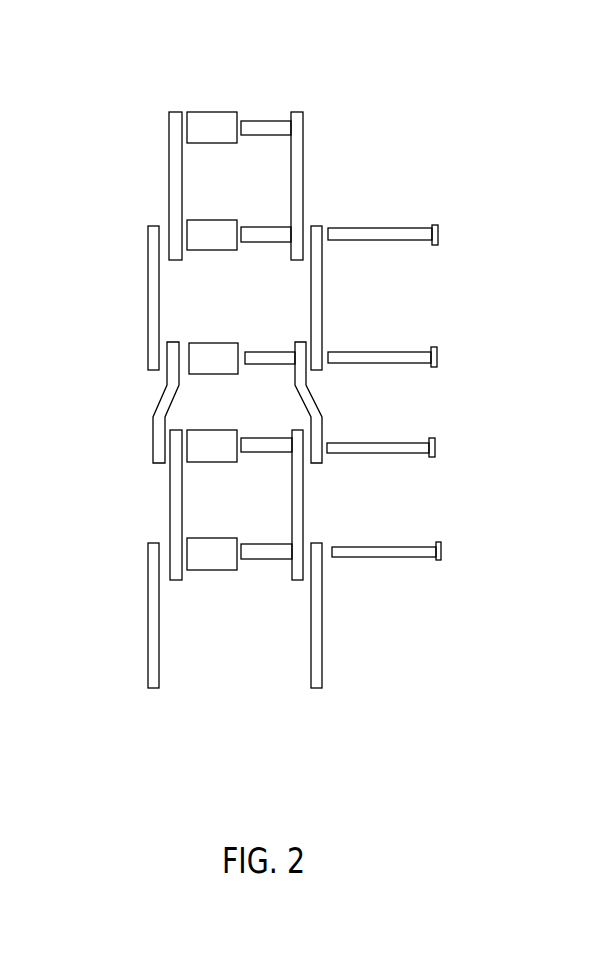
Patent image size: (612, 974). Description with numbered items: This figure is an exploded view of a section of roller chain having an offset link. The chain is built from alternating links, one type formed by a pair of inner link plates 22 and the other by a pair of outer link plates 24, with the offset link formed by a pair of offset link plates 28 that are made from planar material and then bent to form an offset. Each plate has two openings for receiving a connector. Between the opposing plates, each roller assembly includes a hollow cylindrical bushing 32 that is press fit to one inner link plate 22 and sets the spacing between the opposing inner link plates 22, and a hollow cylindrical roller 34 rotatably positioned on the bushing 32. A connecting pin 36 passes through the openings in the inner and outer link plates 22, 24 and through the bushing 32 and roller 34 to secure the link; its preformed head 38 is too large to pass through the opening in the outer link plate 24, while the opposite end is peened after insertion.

The inner link plate 22 is at (169, 160).
The outer link plate 24 is at (322, 307).
The offset link plate 28 is at (153, 418).
The bushing 32 is at (265, 226).
The roller 34 is at (218, 112).
The connecting pin 36 is at (390, 228).
The preformed head 38 is at (438, 238).